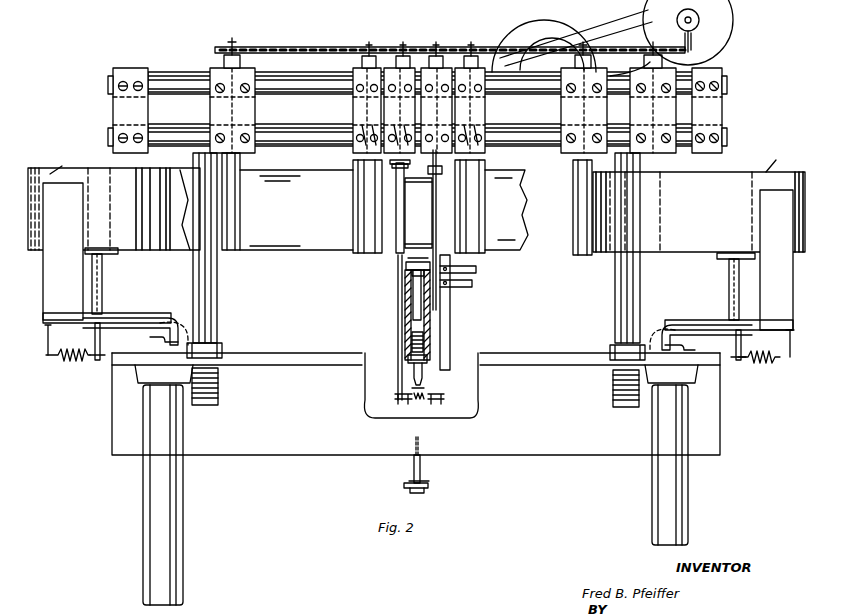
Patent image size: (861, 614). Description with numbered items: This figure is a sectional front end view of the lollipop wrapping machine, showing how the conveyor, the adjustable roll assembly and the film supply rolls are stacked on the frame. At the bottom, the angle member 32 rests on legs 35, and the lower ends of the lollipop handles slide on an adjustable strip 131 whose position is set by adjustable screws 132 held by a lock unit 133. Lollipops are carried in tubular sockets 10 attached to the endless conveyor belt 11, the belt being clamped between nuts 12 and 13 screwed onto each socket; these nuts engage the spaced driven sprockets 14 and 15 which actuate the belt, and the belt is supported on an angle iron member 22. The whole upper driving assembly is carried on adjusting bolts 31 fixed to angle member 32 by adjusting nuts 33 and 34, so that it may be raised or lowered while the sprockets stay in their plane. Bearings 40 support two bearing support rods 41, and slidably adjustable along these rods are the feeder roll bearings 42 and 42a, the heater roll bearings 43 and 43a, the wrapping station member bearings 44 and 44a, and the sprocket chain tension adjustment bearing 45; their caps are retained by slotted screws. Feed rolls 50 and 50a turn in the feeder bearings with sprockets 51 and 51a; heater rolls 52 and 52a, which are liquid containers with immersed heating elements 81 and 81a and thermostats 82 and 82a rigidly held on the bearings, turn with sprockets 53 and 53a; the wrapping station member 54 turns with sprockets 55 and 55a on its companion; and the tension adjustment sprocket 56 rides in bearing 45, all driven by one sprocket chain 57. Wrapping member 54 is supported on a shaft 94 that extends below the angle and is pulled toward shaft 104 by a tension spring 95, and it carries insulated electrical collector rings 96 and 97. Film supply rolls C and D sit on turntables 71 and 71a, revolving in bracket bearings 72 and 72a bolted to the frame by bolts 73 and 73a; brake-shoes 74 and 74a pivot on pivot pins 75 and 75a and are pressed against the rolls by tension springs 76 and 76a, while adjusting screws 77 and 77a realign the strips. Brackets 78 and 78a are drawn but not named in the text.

The tubular socket 10 is at (413, 293).
The endless conveyor belt 11 is at (405, 266).
The nut 12 is at (428, 482).
The nut 13 is at (410, 275).
The driven sprocket 14 is at (478, 270).
The driven sprocket 15 is at (475, 284).
The angle iron member 22 is at (405, 318).
The adjusting bolt 31 is at (213, 295).
The angle member 32 is at (285, 455).
The adjusting nut 33 is at (222, 347).
The adjusting nut 34 is at (220, 372).
The leg 35 is at (183, 522).
The bearing 40 is at (125, 108).
The bearing support rod 41 is at (109, 82).
The feeder roll bearing 42 is at (218, 72).
The feeder roll bearing 42a is at (566, 70).
The heater roll bearing 43 is at (358, 70).
The heater roll bearing 43a is at (480, 74).
The wrapping station member bearing 44 is at (392, 68).
The wrapping station member bearing 44a is at (442, 76).
The sprocket chain tension adjustment bearing 45 is at (642, 70).
The feed roll 50 is at (234, 252).
The feed roll 50a is at (582, 256).
The sprocket 51 is at (226, 47).
The sprocket 51a is at (586, 56).
The heater roll 52 is at (364, 252).
The heater roll 52a is at (480, 252).
The sprocket 53 is at (369, 44).
The sprocket 53a is at (473, 44).
The wrapping station member 54 is at (412, 212).
The sprocket 55 is at (406, 44).
The sprocket 55a is at (437, 44).
The sprocket chain tension adjustment sprocket 56 is at (660, 55).
The sprocket chain 57 is at (290, 48).
The turntable 71 is at (110, 240).
The turntable 71a is at (725, 250).
The bracket bearing 72 is at (103, 280).
The bracket bearing 72a is at (729, 290).
The bolt 73 is at (150, 339).
The bolt 73a is at (692, 350).
The brake-shoe 74 is at (58, 264).
The brake-shoe 74a is at (770, 210).
The pivot pin 75 is at (188, 320).
The pivot pin 75a is at (652, 325).
The tension spring 76 is at (72, 358).
The tension spring 76a is at (764, 362).
The adjusting screw 77 is at (97, 362).
The adjusting screw 77a is at (789, 362).
The arm 78 is at (115, 318).
The arm 78a is at (722, 322).
The heating element 81 is at (352, 203).
The heating element 81a is at (488, 203).
The thermostat 82 is at (398, 186).
The thermostat 82a is at (450, 195).
The shaft 94 is at (398, 373).
The tension spring 95 is at (416, 400).
The electrical collector ring 96 is at (430, 172).
The electrical collector ring 97 is at (412, 164).
The shaft 104 is at (424, 372).
The adjustable strip 131 is at (425, 338).
The adjustable screw 132 is at (420, 386).
The lock unit 133 is at (428, 360).
The film supply roll C is at (62, 163).
The film supply roll D is at (777, 159).